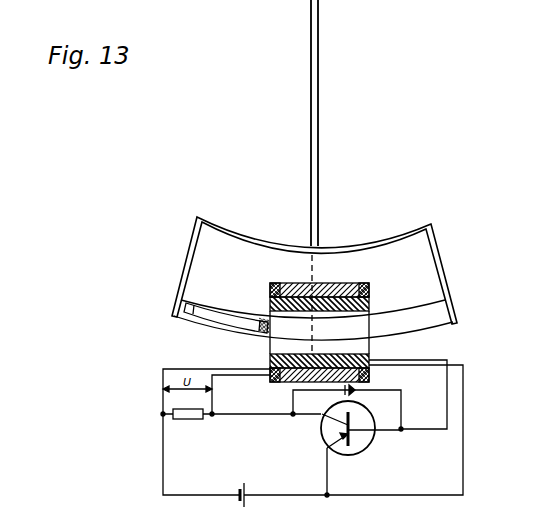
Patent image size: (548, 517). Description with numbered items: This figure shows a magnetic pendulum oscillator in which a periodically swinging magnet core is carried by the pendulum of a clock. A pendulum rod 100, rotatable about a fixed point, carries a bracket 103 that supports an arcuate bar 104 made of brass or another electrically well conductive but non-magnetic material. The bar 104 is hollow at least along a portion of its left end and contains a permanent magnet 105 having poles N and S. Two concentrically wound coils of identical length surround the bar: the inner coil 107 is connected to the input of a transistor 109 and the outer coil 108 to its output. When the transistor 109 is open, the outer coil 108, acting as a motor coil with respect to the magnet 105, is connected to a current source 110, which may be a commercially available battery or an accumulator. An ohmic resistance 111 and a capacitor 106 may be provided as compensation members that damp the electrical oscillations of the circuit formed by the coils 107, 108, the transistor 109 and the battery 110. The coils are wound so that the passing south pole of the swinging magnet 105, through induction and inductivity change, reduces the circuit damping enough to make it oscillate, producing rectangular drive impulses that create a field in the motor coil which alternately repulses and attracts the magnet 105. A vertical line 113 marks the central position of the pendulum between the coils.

The pendulum rod 100 is at (319, 68).
The bracket 103 is at (400, 230).
The arcuate bar 104 is at (425, 322).
The permanent magnet 105 is at (218, 316).
The capacitor 106 is at (355, 392).
The inner coil 107 is at (370, 293).
The outer coil 108 is at (366, 284).
The transistor 109 is at (376, 440).
The current source 110 is at (238, 497).
The ohmic resistance 111 is at (190, 417).
The center line 113 is at (316, 270).